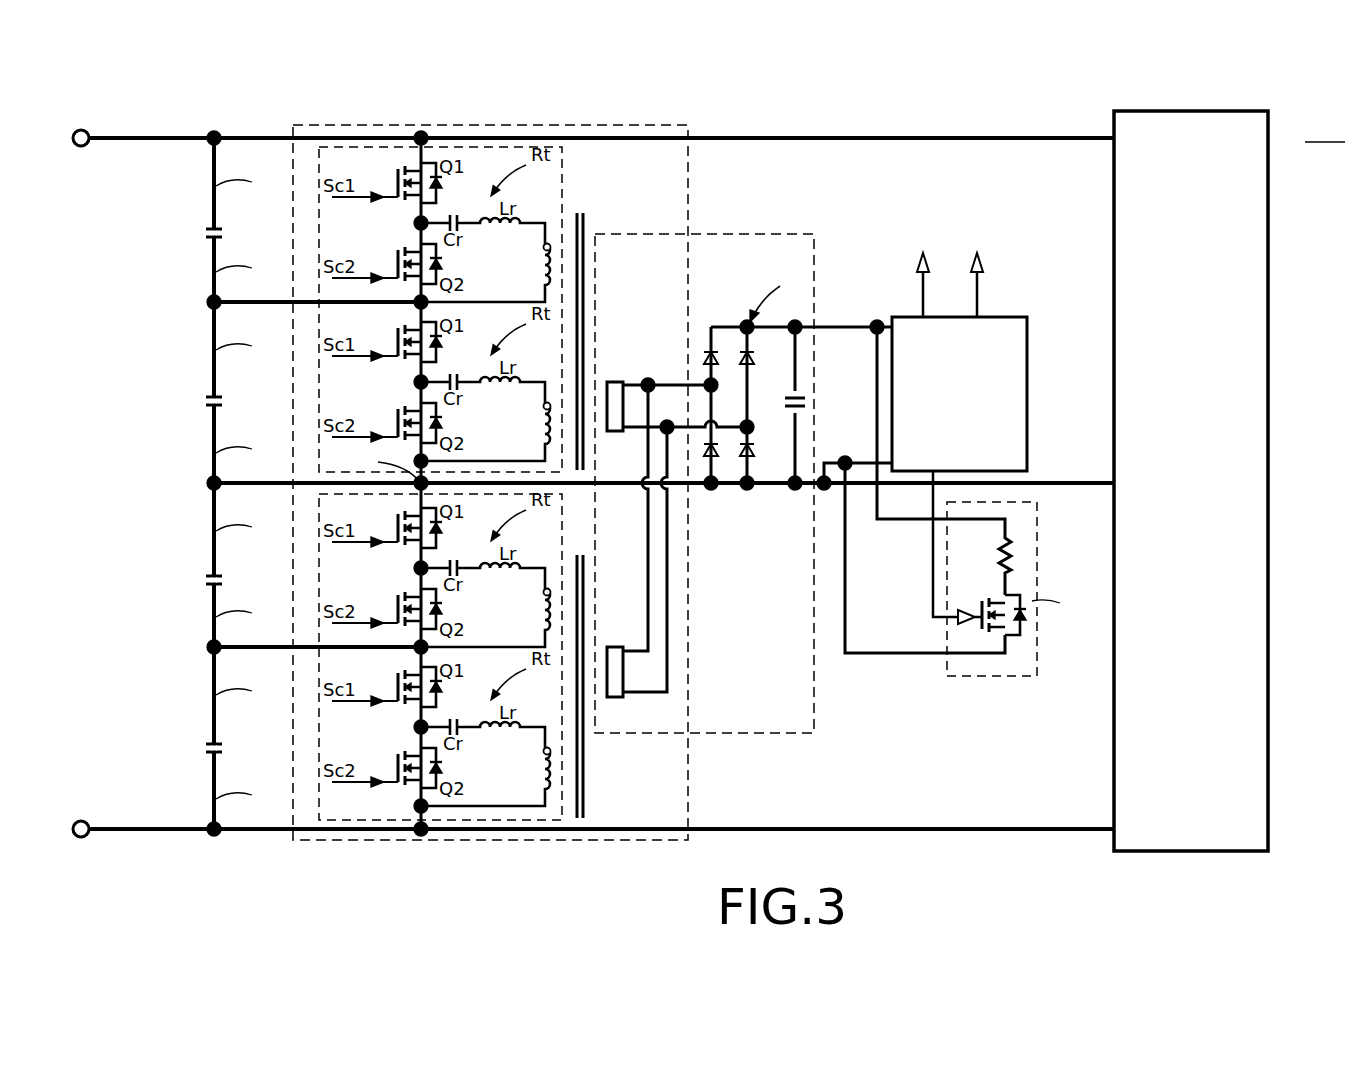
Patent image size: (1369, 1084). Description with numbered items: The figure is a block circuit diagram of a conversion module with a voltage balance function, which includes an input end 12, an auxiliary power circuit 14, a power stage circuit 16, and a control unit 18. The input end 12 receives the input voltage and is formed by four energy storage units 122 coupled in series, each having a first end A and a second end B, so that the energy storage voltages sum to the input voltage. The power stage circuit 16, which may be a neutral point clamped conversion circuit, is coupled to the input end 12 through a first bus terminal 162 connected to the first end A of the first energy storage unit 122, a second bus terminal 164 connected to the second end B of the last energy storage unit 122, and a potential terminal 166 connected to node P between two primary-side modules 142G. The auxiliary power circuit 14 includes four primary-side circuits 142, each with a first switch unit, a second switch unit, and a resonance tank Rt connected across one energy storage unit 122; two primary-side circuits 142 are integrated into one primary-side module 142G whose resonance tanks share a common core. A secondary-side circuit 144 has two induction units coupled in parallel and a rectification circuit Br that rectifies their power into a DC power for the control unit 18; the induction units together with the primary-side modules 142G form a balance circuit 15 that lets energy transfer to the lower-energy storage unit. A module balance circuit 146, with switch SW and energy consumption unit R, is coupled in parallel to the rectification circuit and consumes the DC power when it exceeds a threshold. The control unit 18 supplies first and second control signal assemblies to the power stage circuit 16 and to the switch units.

The input end 12 is at (221, 136).
The energy storage unit 122 is at (204, 236).
The auxiliary power circuit 14 is at (715, 131).
The primary-side circuit 142 is at (404, 222).
The primary-side module 142G is at (371, 160).
The secondary-side circuit 144 is at (752, 240).
The module balance circuit 146 is at (990, 674).
The balance circuit 15 is at (680, 752).
The power stage circuit 16 is at (1248, 309).
The control unit 18 is at (1027, 352).
The first bus terminal 162 is at (989, 135).
The second bus terminal 164 is at (910, 827).
The potential terminal 166 is at (1077, 478).